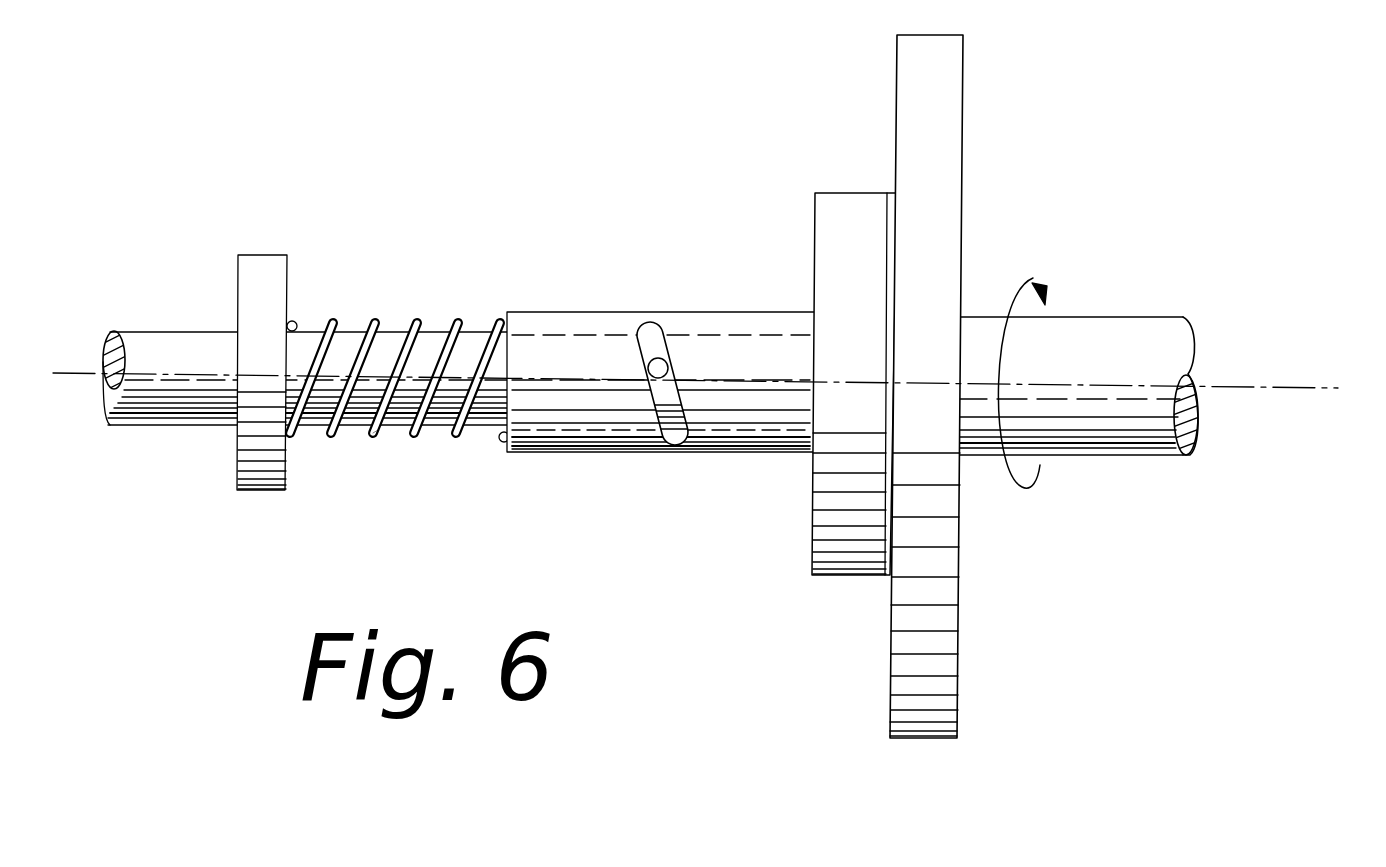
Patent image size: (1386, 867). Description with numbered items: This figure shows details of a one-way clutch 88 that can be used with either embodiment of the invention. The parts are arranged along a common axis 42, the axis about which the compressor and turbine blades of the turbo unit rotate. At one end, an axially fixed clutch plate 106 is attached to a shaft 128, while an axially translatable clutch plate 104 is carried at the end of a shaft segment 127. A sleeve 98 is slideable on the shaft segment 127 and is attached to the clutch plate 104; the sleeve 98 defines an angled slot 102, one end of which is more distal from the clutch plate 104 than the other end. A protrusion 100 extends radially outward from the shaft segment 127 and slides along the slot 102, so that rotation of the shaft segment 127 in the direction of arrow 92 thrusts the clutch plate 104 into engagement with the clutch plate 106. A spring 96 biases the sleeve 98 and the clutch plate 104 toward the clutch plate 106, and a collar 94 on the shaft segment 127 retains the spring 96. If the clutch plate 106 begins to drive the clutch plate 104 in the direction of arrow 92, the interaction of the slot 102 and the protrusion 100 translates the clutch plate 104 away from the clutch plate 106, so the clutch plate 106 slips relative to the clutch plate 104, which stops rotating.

The axis 42 is at (1282, 388).
The one-way clutch 88 is at (657, 256).
The arrow 92 is at (1033, 278).
The collar 94 is at (252, 280).
The spring 96 is at (450, 322).
The sleeve 98 is at (565, 320).
The protrusion 100 is at (668, 360).
The slot 102 is at (673, 438).
The axially translatable clutch plate 104 is at (828, 215).
The axially fixed clutch plate 106 is at (953, 68).
The shaft segment 127 is at (396, 430).
The shaft 128 is at (1145, 437).